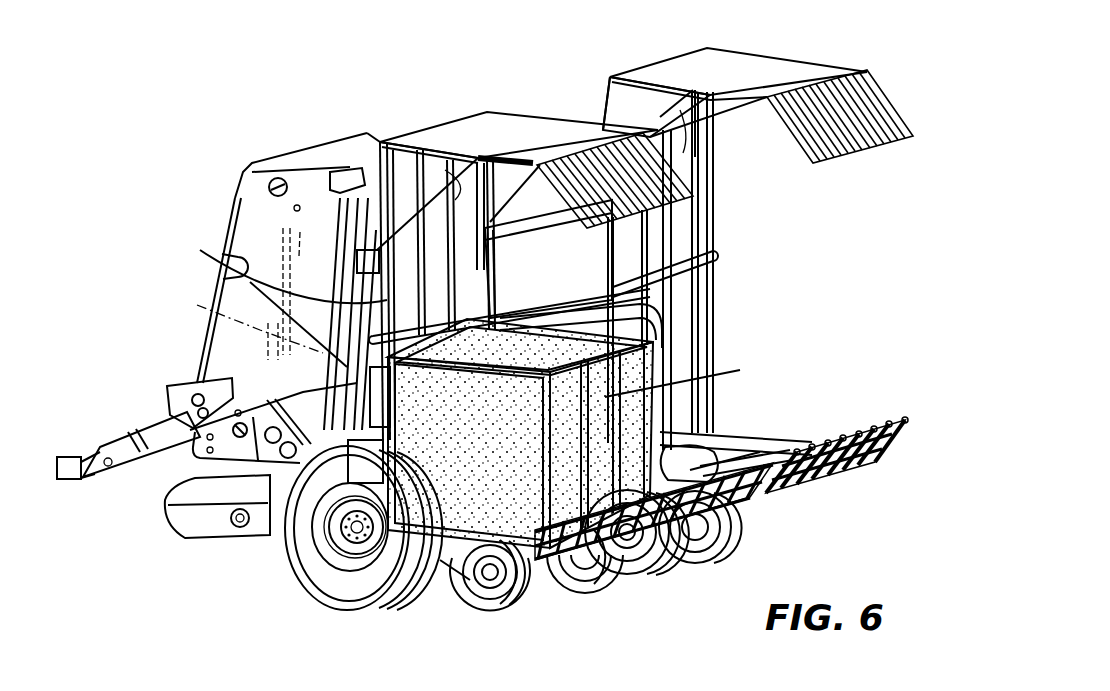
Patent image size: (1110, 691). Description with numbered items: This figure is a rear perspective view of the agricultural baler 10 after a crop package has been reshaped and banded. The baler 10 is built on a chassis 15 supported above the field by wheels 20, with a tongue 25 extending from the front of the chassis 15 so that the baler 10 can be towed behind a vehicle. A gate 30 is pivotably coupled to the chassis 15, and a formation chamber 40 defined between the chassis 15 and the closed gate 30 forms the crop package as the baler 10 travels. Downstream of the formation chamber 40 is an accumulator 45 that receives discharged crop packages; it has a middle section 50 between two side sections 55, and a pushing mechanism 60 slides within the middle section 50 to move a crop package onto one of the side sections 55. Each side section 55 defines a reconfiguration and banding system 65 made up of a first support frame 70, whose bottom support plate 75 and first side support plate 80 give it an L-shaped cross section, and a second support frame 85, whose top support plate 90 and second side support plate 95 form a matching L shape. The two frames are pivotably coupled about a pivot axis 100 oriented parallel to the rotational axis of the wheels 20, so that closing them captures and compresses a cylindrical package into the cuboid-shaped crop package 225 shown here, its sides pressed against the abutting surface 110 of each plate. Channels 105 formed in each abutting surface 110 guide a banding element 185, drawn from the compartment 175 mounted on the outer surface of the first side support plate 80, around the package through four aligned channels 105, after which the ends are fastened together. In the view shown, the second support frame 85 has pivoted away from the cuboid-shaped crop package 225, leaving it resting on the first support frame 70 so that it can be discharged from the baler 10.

The agricultural baler 10 is at (140, 127).
The chassis 15 is at (257, 210).
The wheels 20 is at (318, 578).
The tongue 25 is at (120, 447).
The gate 30 is at (533, 198).
The formation chamber 40 is at (290, 215).
The accumulator 45 is at (932, 185).
The middle section 50 is at (748, 541).
The side sections 55 is at (635, 593).
The pushing mechanism 60 is at (733, 500).
The reconfiguration and banding system 65 is at (462, 102).
The first support frame 70 is at (589, 565).
The bottom support plate 75 is at (453, 587).
The first side support plate 80 is at (320, 510).
The second support frame 85 is at (567, 105).
The top support plate 90 is at (224, 265).
The second side support plate 95 is at (492, 128).
The pivot axis 100 is at (200, 305).
The channels 105 is at (460, 178).
The abutting surface 110 is at (357, 147).
The compartment 175 is at (207, 518).
The banding element 185 is at (615, 383).
The cuboid-shaped crop package 225 is at (484, 460).